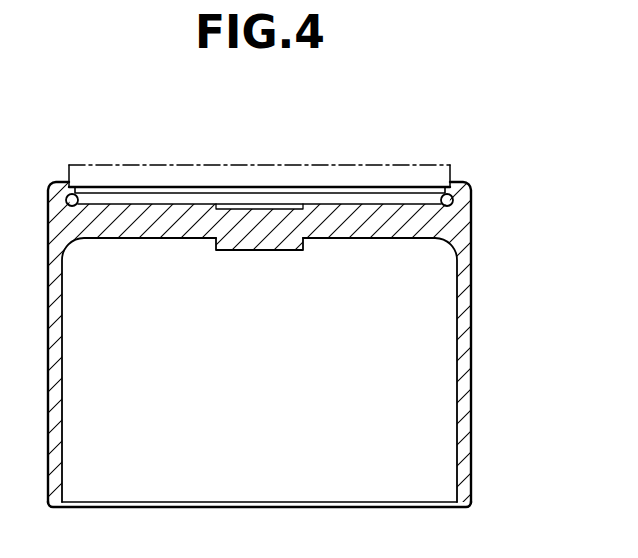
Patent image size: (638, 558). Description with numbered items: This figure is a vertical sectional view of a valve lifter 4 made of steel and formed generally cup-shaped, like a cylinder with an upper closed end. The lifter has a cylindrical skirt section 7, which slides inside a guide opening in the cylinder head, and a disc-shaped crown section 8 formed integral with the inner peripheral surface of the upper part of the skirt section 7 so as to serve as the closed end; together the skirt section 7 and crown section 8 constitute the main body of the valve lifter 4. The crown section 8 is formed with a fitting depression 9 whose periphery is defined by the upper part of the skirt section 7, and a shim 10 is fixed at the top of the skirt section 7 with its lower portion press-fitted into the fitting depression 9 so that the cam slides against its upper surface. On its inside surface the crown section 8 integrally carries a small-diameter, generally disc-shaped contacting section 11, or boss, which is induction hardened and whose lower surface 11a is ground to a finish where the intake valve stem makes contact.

The valve lifter 4 is at (477, 393).
The cylindrical skirt section 7 is at (472, 485).
The crown section 8 is at (417, 217).
The fitting depression 9 is at (103, 203).
The shim 10 is at (421, 172).
The contacting section 11 is at (282, 238).
The lower surface of the contacting section 11a is at (241, 250).